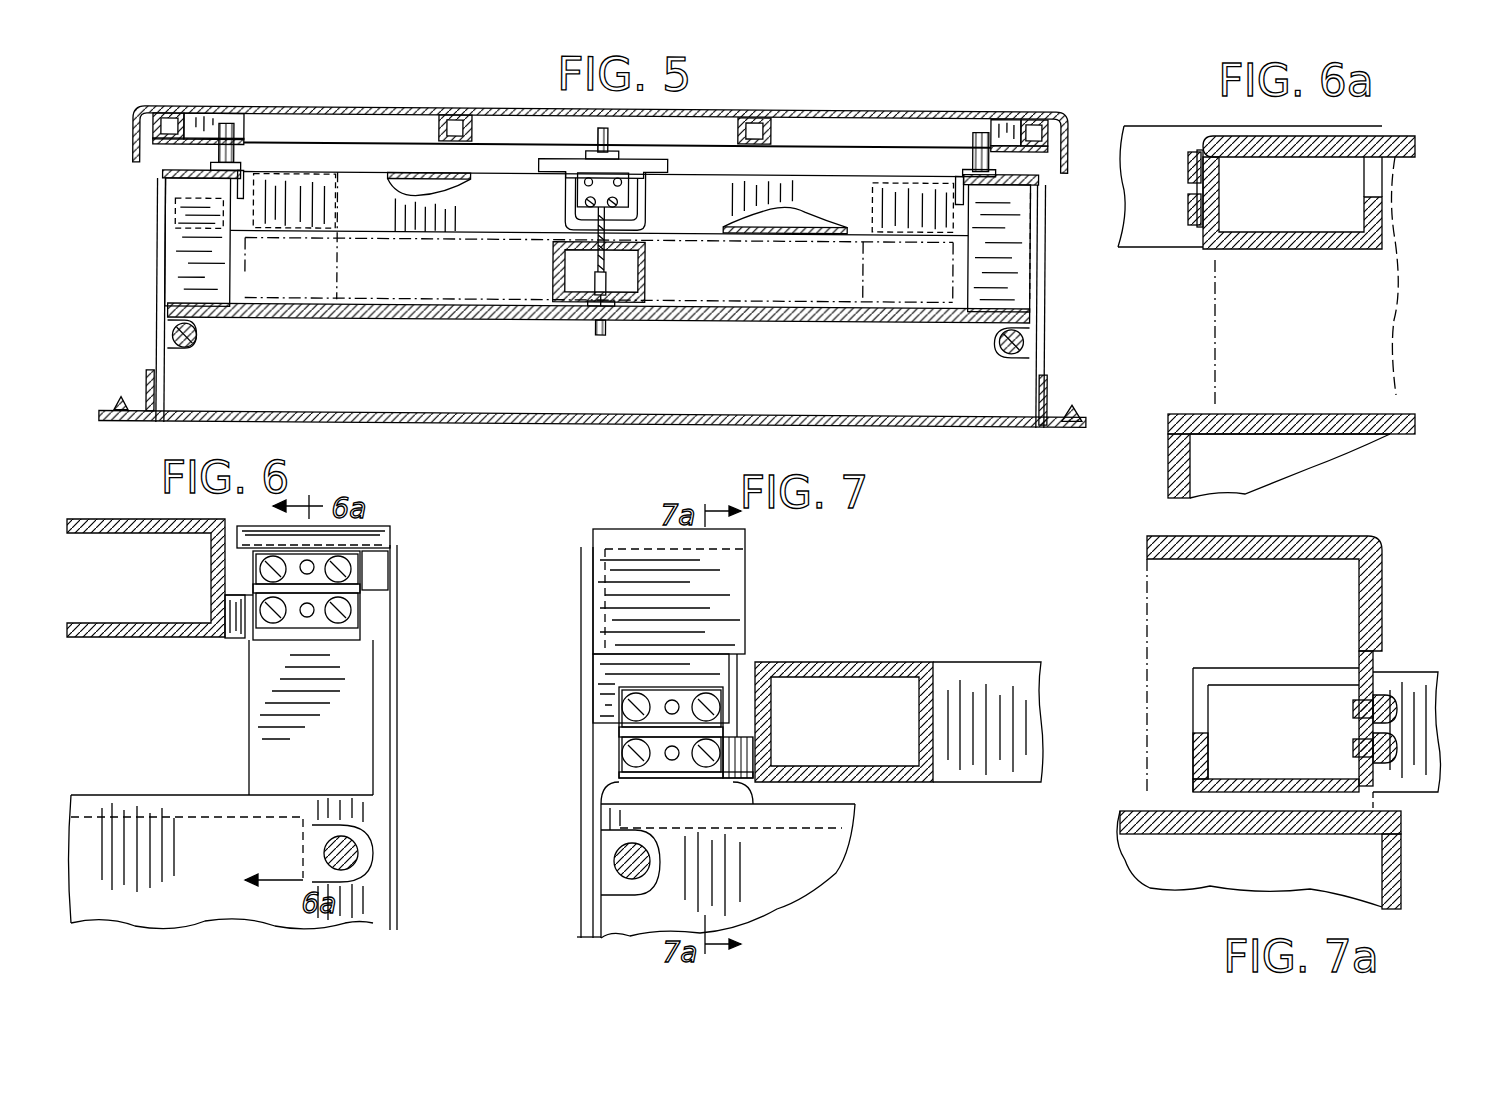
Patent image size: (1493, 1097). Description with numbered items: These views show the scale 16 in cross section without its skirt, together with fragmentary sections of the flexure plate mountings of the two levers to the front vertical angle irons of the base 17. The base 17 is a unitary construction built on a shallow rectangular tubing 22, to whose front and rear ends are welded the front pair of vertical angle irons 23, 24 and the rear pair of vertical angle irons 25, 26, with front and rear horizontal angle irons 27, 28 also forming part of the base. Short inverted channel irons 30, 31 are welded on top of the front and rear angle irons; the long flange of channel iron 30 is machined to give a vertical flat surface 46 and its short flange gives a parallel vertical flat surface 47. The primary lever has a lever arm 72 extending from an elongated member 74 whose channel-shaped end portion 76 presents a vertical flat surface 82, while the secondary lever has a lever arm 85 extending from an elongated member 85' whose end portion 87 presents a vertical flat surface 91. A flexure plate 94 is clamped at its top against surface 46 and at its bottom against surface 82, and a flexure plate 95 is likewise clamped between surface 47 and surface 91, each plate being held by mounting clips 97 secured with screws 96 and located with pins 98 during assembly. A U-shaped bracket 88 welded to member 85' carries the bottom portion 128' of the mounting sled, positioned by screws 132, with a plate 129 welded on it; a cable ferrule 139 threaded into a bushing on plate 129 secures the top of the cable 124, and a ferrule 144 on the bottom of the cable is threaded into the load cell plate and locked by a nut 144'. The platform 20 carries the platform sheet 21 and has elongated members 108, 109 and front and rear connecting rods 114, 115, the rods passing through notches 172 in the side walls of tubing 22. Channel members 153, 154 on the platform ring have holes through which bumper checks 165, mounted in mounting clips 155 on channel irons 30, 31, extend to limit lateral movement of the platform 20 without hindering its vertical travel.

In FIG. 5, the scale 16 is at (120, 90).
In FIG. 5, the base 17 is at (143, 318).
In FIG. 5, the platform 20 is at (160, 150).
In FIG. 5, the platform sheet 21 is at (270, 110).
In FIG. 6, the shallow rectangular tubing 22 is at (140, 795).
In FIG. 6A, the shallow rectangular tubing 22 is at (1192, 412).
In FIG. 7, the shallow rectangular tubing 22 is at (838, 876).
In FIG. 7A, the shallow rectangular tubing 22 is at (1145, 812).
In FIG. 5, the vertical angle iron 23 is at (157, 260).
In FIG. 6, the vertical angle iron 23 is at (397, 706).
In FIG. 7, the vertical angle iron 24 is at (581, 846).
In FIG. 5, the vertical angle iron 25 is at (1045, 310).
In FIG. 6A, the vertical angle iron 25 is at (1215, 310).
In FIG. 6, the vertical angle iron 26 is at (268, 768).
In FIG. 7A, the vertical angle iron 26 is at (1147, 650).
In FIG. 5, the front horizontal angle iron 27 is at (147, 375).
In FIG. 5, the rear horizontal angle iron 28 is at (1050, 392).
In FIG. 5, the short inverted channel iron 30 is at (160, 182).
In FIG. 6, the short inverted channel iron 30 is at (390, 536).
In FIG. 6A, the short inverted channel iron 30 is at (1385, 137).
In FIG. 7, the short inverted channel iron 30 is at (745, 593).
In FIG. 7A, the short inverted channel iron 30 is at (1330, 536).
In FIG. 5, the short inverted channel iron 31 is at (1012, 185).
In FIG. 7, the vertical flat surface 46 is at (712, 668).
In FIG. 6, the vertical flat surface 47 is at (388, 572).
In FIG. 7, the lever arm 72 is at (905, 663).
In FIG. 7A, the lever arm 72 is at (1412, 674).
In FIG. 5, the elongated member 74 is at (645, 264).
In FIG. 7, the elongated member 74 is at (1000, 663).
In FIG. 7A, the elongated member 74 is at (1230, 668).
In FIG. 7, the end portion 76 is at (746, 796).
In FIG. 7A, the end portion 76 is at (1193, 745).
In FIG. 7, the vertical flat surface 82 is at (758, 741).
In FIG. 6, the lever arm 85 is at (126, 657).
In FIG. 6A, the lever arm 85 is at (1250, 165).
In FIG. 5, the elongated member 85' is at (599, 222).
In FIG. 6, the elongated member 85' is at (146, 561).
In FIG. 6A, the elongated member 85' is at (1417, 276).
In FIG. 6, the end portion 87 is at (234, 640).
In FIG. 6A, the end portion 87 is at (1276, 250).
In FIG. 5, the U-shaped bracket 88 is at (645, 221).
In FIG. 6, the vertical flat surface 91 is at (236, 600).
In FIG. 6A, the vertical flat surface 91 is at (1180, 248).
In FIG. 7A, the flexure plate 94 is at (1360, 731).
In FIG. 6, the flexure plate 95 is at (360, 591).
In FIG. 6A, the flexure plate 95 is at (1197, 190).
In FIG. 7, the flexure plate 95 is at (622, 736).
In FIG. 6, the screw 96 is at (338, 624).
In FIG. 7, the screw 96 is at (706, 693).
In FIG. 6, the mounting clip 97 is at (360, 557).
In FIG. 6A, the mounting clip 97 is at (1188, 165).
In FIG. 7, the mounting clip 97 is at (622, 701).
In FIG. 7A, the mounting clip 97 is at (1380, 695).
In FIG. 6, the pin 98 is at (312, 562).
In FIG. 7, the pin 98 is at (672, 761).
In FIG. 5, the elongated member 108 is at (438, 129).
In FIG. 5, the elongated member 109 is at (770, 130).
In FIG. 5, the front connecting rod 114 is at (188, 350).
In FIG. 5, the rear connecting rod 115 is at (1008, 355).
In FIG. 5, the cable 124 is at (585, 206).
In FIG. 5, the bottom portion of mounting sled 128' is at (562, 191).
In FIG. 5, the plate 129 is at (640, 161).
In FIG. 5, the screw 132 is at (621, 184).
In FIG. 5, the cable ferrule 139 is at (597, 137).
In FIG. 5, the ferrule 144 is at (628, 287).
In FIG. 5, the nut 144' is at (563, 330).
In FIG. 5, the horizontal channel member 153 is at (238, 112).
In FIG. 5, the horizontal channel member 154 is at (978, 118).
In FIG. 5, the mounting clip 155 is at (240, 168).
In FIG. 5, the bumper check 165 is at (233, 148).
In FIG. 5, the notch 172 is at (198, 340).